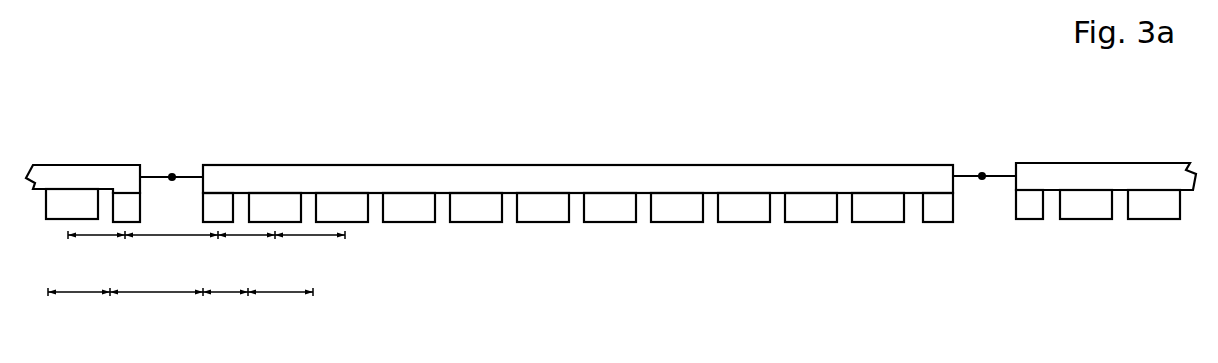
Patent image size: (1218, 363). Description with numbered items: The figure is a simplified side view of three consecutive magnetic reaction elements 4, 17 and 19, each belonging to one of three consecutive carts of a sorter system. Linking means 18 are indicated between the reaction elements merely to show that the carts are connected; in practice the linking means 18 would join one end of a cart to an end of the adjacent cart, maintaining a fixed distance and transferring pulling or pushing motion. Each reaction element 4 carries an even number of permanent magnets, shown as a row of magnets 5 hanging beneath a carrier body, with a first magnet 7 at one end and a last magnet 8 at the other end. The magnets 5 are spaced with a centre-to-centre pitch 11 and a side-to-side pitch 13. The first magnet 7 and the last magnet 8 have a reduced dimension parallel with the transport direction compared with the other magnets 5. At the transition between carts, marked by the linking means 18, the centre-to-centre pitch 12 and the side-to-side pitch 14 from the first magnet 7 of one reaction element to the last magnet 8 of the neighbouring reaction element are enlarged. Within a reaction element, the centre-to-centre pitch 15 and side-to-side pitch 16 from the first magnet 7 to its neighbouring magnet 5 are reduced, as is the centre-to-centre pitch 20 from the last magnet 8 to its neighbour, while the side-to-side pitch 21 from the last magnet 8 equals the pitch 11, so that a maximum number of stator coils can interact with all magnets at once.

The magnetic reaction element 4 is at (608, 180).
The magnets 5 is at (607, 207).
The first magnet 7 is at (220, 203).
The last magnet 8 is at (128, 203).
The centre-to-centre pitch 11 is at (310, 260).
The centre-to-centre pitch 12 is at (171, 260).
The side-to-side pitch 13 is at (280, 311).
The side-to-side pitch 14 is at (156, 311).
The centre-to-centre pitch 15 is at (246, 260).
The side-to-side pitch 16 is at (221, 311).
The magnetic reaction element 17 is at (62, 182).
The linking means 18 is at (172, 180).
The magnetic reaction element 19 is at (1108, 183).
The centre-to-centre pitch 20 is at (96, 260).
The side-to-side pitch 21 is at (73, 311).